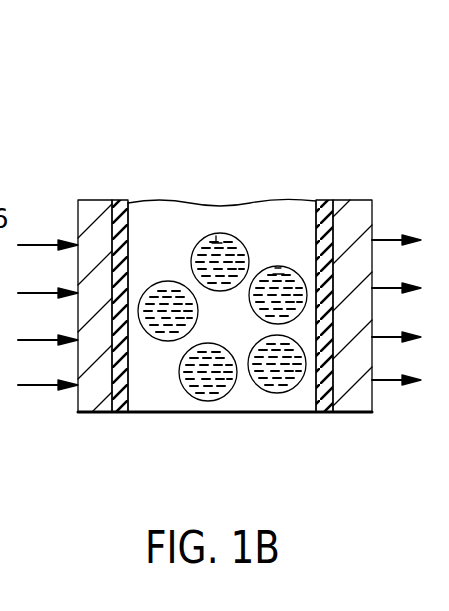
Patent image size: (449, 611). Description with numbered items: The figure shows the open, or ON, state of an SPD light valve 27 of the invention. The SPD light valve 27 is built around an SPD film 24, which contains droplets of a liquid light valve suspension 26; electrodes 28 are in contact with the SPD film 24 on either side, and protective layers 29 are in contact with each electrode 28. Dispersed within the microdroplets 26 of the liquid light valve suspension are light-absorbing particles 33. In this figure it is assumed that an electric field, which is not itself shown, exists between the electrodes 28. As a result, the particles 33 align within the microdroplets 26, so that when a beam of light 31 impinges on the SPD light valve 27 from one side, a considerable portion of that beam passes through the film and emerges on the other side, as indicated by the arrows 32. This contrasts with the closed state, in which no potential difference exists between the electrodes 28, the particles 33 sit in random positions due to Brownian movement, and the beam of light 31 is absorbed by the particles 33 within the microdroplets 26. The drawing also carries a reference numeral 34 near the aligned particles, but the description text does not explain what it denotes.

The SPD film 24 is at (315, 118).
The microdroplets of liquid light valve suspension 26 is at (246, 247).
The SPD light valve 27 is at (101, 138).
The electrodes 28 is at (120, 203).
The protective layers 29 is at (78, 212).
The beam of light 31 is at (23, 293).
The arrows 32 is at (373, 288).
The particles 33 is at (216, 236).
The contact point 34 is at (281, 268).